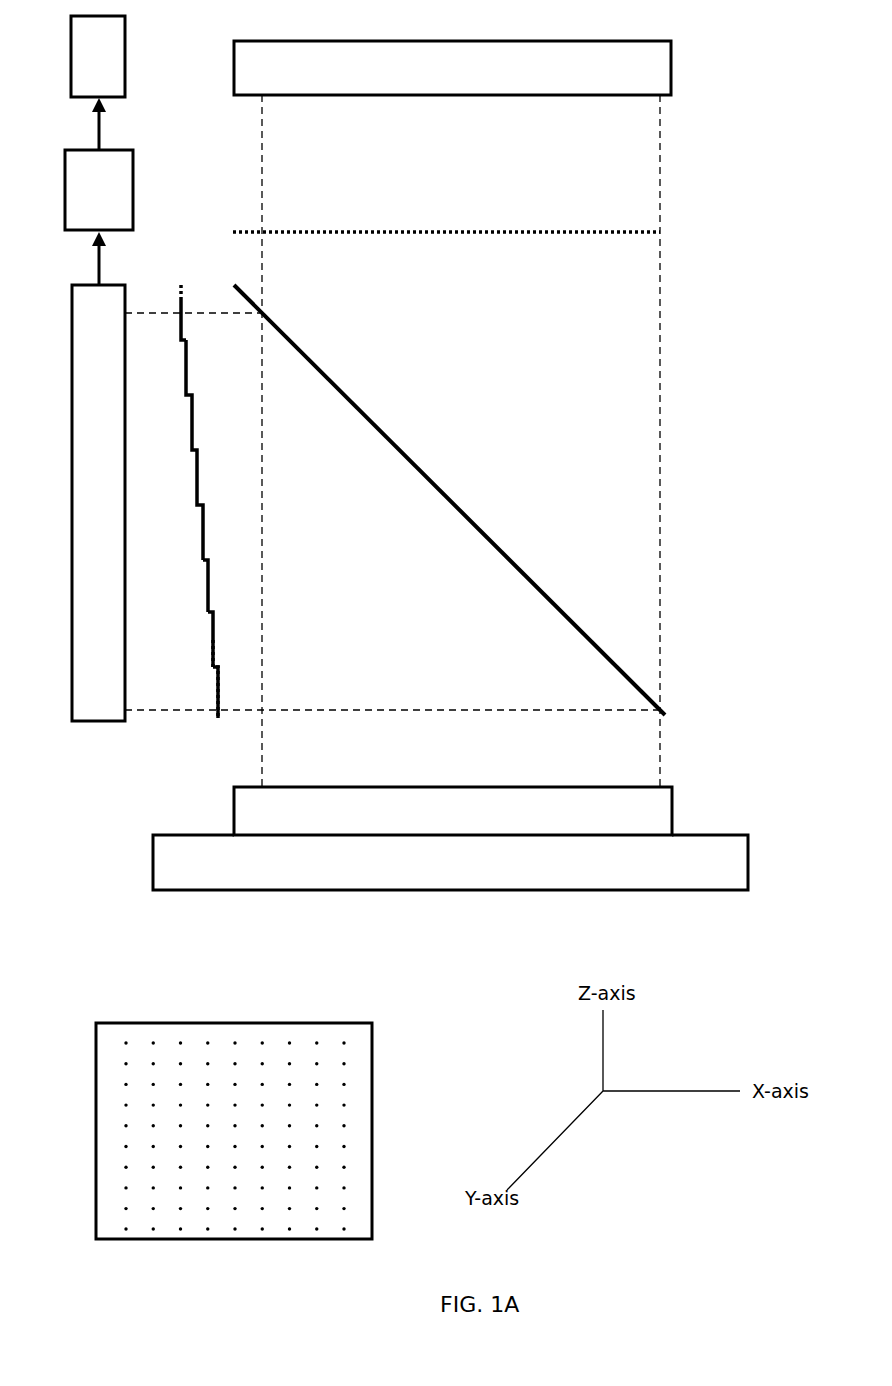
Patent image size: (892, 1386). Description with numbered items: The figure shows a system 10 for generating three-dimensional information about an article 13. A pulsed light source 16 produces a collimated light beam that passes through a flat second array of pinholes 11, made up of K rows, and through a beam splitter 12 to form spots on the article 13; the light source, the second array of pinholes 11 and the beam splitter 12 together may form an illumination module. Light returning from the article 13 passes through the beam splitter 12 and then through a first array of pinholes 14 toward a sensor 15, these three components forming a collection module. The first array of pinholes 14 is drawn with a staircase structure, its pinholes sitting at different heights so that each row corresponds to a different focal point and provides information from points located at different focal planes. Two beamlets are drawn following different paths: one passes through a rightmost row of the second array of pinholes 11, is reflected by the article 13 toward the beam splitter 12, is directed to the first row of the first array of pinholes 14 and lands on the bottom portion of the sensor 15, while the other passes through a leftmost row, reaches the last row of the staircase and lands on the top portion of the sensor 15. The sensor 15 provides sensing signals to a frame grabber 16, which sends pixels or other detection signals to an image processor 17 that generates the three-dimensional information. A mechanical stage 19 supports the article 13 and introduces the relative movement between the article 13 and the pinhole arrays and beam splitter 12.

The system 10 is at (705, 1276).
The second array of pinholes 11 is at (665, 232).
The beam splitter 12 is at (440, 490).
The article 13 is at (453, 811).
The first array of pinholes 14 is at (193, 736).
The sensor 15 is at (98, 503).
The pulsed light source / frame grabber 16 is at (368, 135).
The image processor 17 is at (98, 56).
The mechanical stage 19 is at (450, 862).